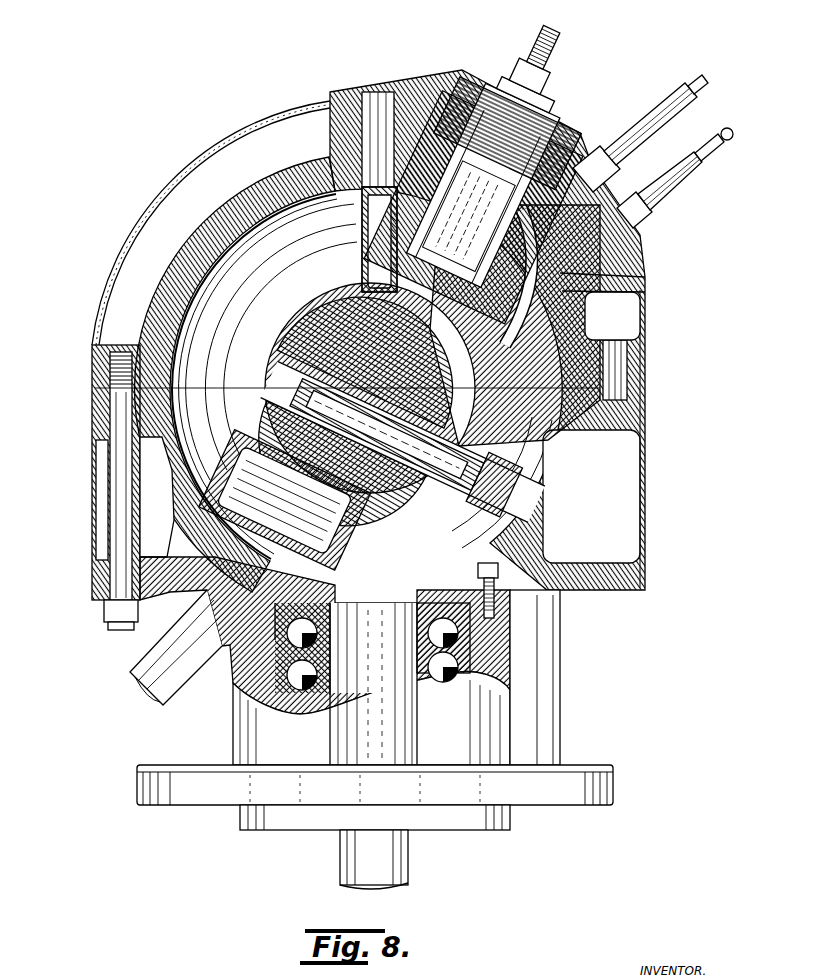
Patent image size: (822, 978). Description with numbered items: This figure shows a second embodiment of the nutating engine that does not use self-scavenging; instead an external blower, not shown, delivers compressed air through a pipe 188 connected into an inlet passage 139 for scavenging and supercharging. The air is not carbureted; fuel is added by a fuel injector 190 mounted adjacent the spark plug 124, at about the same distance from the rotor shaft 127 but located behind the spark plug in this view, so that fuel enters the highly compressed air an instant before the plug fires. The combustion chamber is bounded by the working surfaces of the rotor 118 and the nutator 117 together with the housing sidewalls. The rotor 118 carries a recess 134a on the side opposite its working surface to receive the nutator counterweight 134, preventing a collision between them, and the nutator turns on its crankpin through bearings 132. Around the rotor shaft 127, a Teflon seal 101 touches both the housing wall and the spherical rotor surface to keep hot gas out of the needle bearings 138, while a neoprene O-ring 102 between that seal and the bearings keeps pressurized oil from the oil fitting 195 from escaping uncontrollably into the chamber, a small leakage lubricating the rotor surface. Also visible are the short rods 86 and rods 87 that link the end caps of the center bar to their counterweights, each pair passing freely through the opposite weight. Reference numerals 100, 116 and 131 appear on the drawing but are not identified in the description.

The short rods 86 is at (293, 362).
The rods 87 is at (285, 386).
The mounting flange 100 is at (130, 803).
The seal 101 is at (397, 139).
The O-ring 102 is at (473, 207).
The slot 116 is at (430, 507).
The nutator 117 is at (570, 440).
The rotor 118 is at (366, 202).
The spark plug 124 is at (670, 190).
The rotor shaft 127 is at (415, 250).
The support bracket 131 is at (535, 677).
The bearings 132 is at (462, 493).
The nutator counterweight 134 is at (512, 331).
The recess 134a is at (540, 287).
The needle bearings 138 is at (466, 74).
The inlet passage 139 is at (213, 466).
The pipe 188 is at (133, 677).
The fuel injector 190 is at (681, 93).
The oil fitting 195 is at (557, 70).